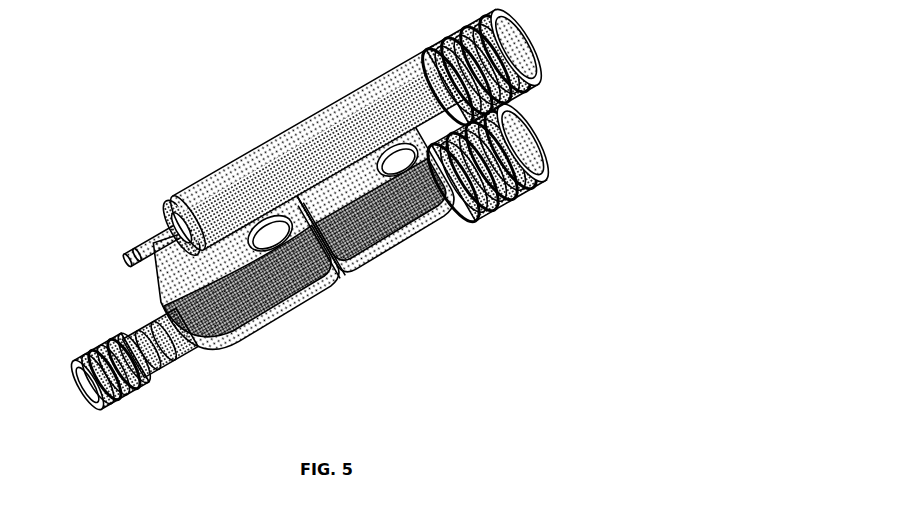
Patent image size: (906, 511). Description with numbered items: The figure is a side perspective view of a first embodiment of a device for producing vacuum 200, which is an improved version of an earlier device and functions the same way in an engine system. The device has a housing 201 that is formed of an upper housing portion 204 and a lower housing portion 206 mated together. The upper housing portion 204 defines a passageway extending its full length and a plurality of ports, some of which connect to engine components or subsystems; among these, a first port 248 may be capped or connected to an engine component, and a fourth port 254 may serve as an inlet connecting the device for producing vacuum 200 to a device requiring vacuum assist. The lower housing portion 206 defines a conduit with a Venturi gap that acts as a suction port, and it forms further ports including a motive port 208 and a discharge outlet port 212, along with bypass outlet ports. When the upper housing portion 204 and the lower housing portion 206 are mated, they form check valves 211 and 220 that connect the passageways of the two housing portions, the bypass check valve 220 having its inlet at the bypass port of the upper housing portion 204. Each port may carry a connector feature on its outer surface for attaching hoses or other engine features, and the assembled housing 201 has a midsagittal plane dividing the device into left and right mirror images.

The device for producing vacuum 200 is at (327, 230).
The housing 201 is at (205, 186).
The upper housing portion 204 is at (313, 128).
The lower housing portion 206 is at (343, 278).
The motive port 208 is at (83, 390).
The check valve 211 is at (305, 300).
The discharge outlet port 212 is at (535, 160).
The bypass check valve 220 is at (432, 232).
The first port 248 is at (118, 258).
The fourth port 254 is at (540, 60).